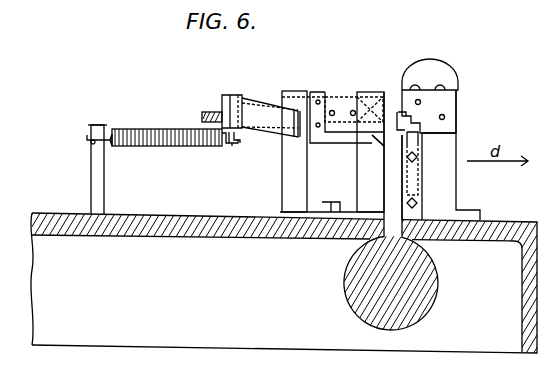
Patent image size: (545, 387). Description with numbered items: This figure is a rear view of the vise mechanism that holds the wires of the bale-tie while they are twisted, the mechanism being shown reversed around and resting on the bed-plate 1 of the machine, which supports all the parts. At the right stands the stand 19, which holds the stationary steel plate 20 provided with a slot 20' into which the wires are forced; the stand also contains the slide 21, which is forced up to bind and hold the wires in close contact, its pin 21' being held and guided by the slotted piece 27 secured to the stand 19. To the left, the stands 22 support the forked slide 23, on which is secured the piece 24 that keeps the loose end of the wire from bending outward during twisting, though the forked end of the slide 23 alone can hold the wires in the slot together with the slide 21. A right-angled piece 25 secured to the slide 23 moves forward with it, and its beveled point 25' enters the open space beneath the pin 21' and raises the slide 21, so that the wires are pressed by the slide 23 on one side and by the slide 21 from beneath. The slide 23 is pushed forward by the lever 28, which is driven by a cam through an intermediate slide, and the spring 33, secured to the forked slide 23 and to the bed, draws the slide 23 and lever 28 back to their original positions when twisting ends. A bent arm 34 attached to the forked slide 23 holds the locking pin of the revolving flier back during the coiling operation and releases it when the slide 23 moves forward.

The bed-plate 1 is at (272, 265).
The stand 19 is at (439, 149).
The stationary steel plate 20 is at (441, 139).
The slot 20' is at (395, 114).
The slide 21 is at (442, 171).
The pin 21' is at (395, 122).
The stands 22 is at (332, 151).
The forked slide 23 is at (262, 96).
The piece 24 is at (330, 103).
The right-angled piece 25 is at (347, 128).
The beveled point 25' is at (386, 148).
The slotted piece 27 is at (405, 184).
The lever 28 is at (210, 112).
The spring 33 is at (163, 131).
The bent arm 34 is at (261, 116).